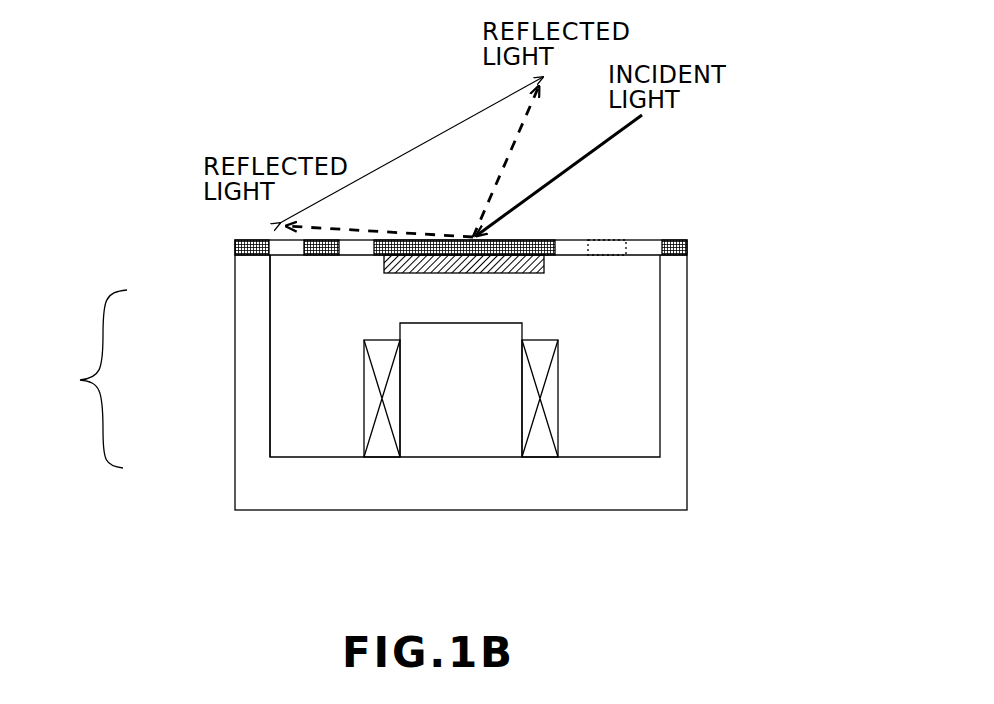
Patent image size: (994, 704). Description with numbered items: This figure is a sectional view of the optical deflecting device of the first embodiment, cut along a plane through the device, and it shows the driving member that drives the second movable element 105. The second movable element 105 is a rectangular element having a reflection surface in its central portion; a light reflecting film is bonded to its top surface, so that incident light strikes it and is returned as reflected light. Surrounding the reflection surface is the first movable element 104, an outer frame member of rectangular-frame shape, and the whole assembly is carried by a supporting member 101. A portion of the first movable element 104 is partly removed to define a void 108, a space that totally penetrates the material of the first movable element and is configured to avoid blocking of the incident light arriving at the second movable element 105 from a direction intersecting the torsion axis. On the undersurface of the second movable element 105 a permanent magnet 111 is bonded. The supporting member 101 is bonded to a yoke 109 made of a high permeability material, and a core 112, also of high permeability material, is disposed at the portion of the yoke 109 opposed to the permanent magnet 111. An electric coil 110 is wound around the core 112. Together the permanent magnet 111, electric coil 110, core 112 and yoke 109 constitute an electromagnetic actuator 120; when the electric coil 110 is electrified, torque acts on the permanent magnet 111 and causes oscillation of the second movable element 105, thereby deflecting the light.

The supporting member 101 is at (237, 242).
The first movable element 104 is at (304, 256).
The second movable element 105 is at (513, 240).
The void 108 is at (610, 258).
The yoke 109 is at (257, 288).
The electric coil 110 is at (387, 399).
The permanent magnet 111 is at (403, 273).
The core 112 is at (427, 444).
The electromagnetic actuator 120 is at (81, 379).